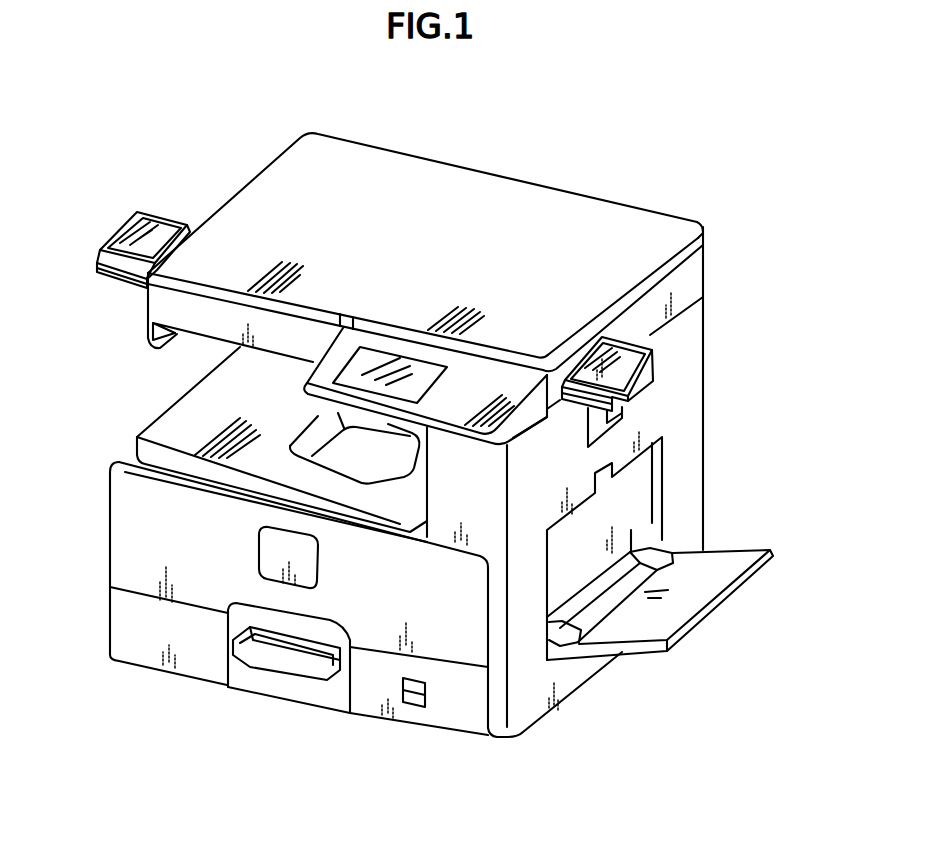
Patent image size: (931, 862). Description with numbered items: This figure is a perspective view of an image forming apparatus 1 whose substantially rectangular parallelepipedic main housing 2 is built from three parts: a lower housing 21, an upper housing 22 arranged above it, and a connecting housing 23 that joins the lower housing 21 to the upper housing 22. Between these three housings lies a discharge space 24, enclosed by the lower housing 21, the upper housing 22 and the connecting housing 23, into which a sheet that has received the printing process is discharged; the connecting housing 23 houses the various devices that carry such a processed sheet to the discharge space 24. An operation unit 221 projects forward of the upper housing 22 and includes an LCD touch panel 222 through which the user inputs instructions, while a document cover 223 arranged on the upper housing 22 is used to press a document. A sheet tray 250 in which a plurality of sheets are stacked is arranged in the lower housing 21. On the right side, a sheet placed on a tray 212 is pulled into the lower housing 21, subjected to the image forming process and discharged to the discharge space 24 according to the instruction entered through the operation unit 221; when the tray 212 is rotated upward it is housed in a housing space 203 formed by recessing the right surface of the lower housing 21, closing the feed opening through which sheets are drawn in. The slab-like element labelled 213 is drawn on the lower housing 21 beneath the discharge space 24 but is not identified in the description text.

The image forming apparatus 1 is at (680, 165).
The main housing 2 is at (710, 357).
The lower housing 21 is at (106, 550).
The upper housing 22 is at (143, 305).
The connecting housing 23 is at (448, 505).
The discharge space 24 is at (207, 355).
The housing space 203 is at (637, 478).
The tray 212 is at (720, 563).
The sheet discharge tray 213 is at (177, 417).
The operation unit 221 is at (470, 390).
The LCD touch panel 222 is at (382, 365).
The document cover 223 is at (685, 250).
The sheet tray 250 is at (372, 700).